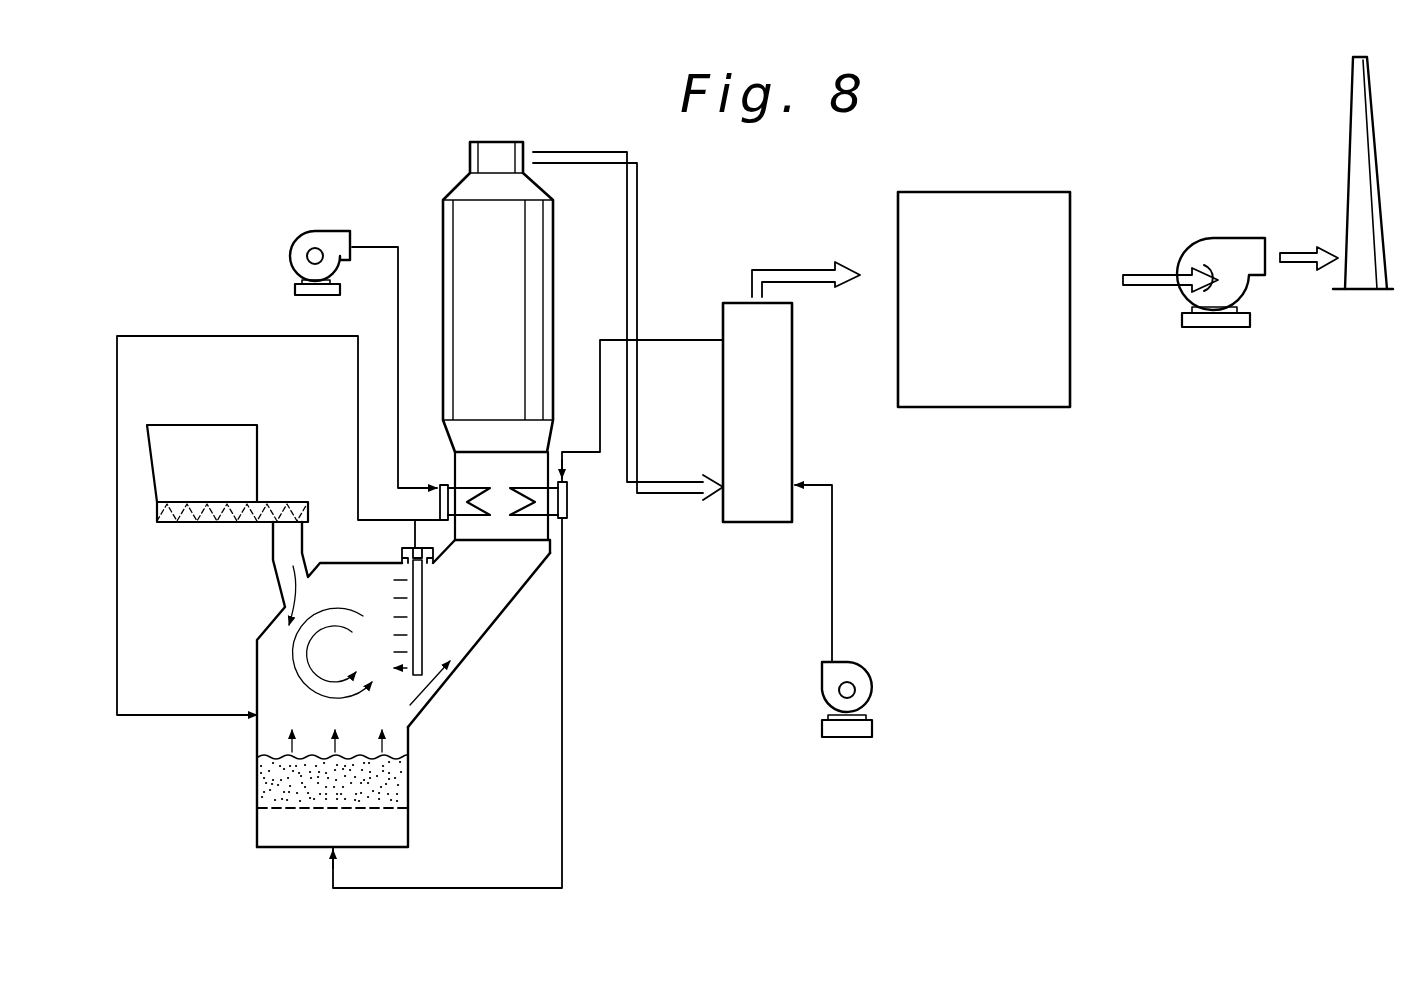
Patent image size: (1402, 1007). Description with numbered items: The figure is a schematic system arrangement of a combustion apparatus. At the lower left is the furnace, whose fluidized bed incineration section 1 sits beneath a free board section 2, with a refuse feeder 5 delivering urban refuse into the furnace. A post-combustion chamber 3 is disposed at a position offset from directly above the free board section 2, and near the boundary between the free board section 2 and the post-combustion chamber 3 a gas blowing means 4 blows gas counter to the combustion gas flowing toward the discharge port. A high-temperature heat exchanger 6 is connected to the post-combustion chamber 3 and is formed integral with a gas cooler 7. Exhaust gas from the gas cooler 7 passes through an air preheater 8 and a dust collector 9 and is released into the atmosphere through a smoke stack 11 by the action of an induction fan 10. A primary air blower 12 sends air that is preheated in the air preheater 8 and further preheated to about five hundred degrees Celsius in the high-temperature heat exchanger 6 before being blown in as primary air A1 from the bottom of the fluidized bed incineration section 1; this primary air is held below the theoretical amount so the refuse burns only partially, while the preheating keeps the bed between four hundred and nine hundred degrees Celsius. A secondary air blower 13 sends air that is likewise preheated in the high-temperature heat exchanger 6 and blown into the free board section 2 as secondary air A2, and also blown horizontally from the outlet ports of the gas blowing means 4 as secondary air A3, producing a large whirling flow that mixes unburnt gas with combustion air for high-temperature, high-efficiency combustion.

The fluidized bed incineration section 1 is at (390, 788).
The free board section 2 is at (267, 664).
The post-combustion chamber 3 is at (518, 570).
The gas blowing means 4 is at (425, 648).
The refuse feeder 5 is at (236, 430).
The high-temperature heat exchanger 6 is at (500, 502).
The gas cooler 7 is at (537, 297).
The air preheater 8 is at (772, 422).
The dust collector 9 is at (1050, 397).
The induction fan 10 is at (1220, 243).
The smoke stack 11 is at (1367, 280).
The primary air blower 12 is at (862, 693).
The secondary air blower 13 is at (328, 238).
The primary air A1 is at (447, 703).
The secondary air A2 is at (278, 543).
The secondary air A3 is at (402, 566).